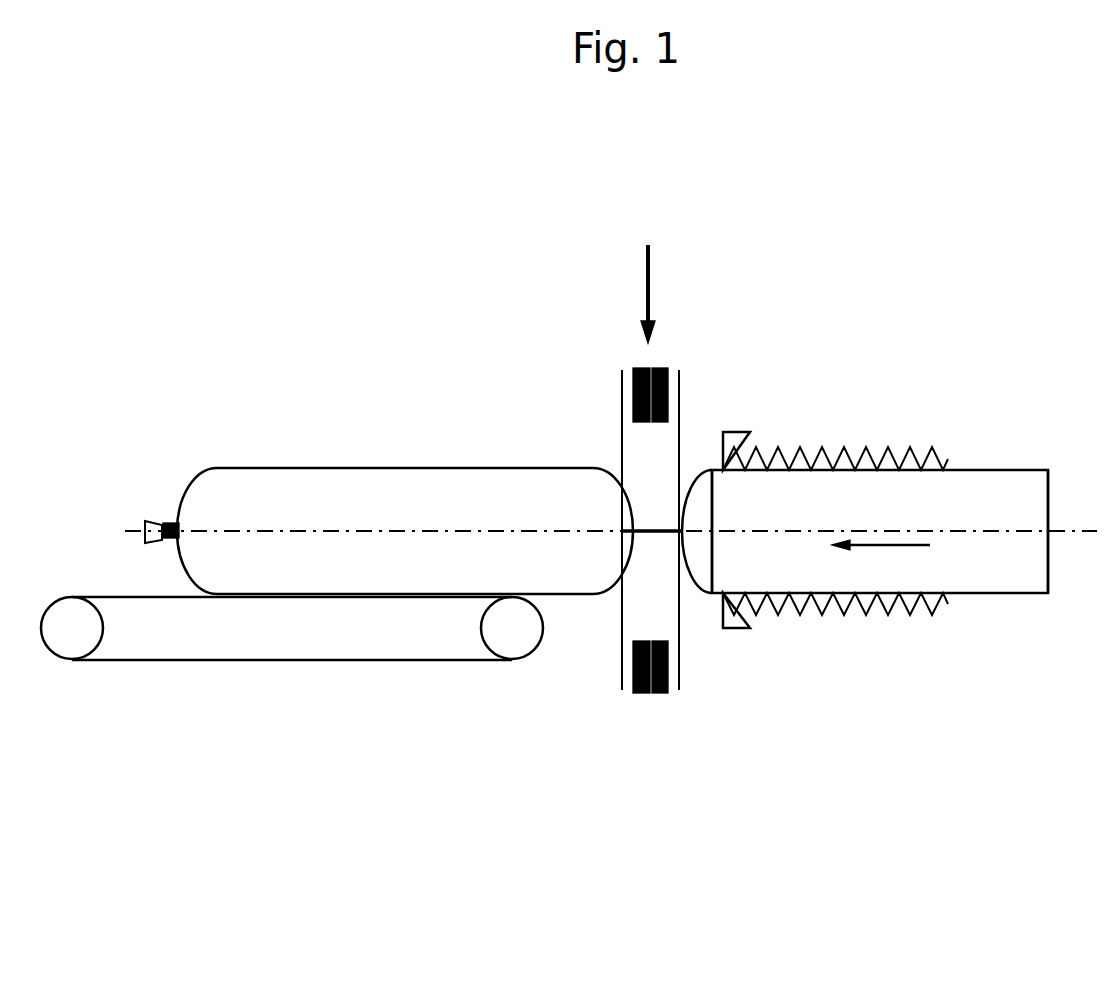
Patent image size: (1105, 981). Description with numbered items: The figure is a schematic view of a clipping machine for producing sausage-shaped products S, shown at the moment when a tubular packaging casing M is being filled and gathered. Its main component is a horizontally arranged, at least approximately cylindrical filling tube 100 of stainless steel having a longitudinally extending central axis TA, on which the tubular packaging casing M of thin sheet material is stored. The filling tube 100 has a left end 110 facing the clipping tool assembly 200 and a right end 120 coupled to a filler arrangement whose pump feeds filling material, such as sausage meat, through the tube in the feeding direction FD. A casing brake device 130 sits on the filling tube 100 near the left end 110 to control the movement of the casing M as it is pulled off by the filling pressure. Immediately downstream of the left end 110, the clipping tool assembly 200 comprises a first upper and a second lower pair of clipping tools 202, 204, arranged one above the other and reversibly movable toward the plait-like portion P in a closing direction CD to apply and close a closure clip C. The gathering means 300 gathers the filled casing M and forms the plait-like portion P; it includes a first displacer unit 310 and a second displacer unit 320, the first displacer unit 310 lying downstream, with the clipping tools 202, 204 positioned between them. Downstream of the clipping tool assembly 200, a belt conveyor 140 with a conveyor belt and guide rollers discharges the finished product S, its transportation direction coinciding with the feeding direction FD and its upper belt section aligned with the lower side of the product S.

The filling tube 100 is at (865, 519).
The left end 110 is at (713, 498).
The right end 120 is at (1048, 507).
The casing brake device 130 is at (740, 623).
The belt conveyor 140 is at (391, 706).
The clipping tool assembly 200 is at (633, 516).
The first upper pair of clipping tools 202 is at (667, 387).
The second lower pair of clipping tools 204 is at (633, 682).
The gathering means 300 is at (711, 596).
The first displacer unit 310 is at (622, 567).
The second displacer unit 320 is at (679, 645).
The sausage-shaped product S is at (432, 467).
The closure clip C is at (163, 525).
The plait-like portion P is at (652, 530).
The tubular packaging casing M is at (908, 613).
The closing direction CD is at (669, 294).
The feeding direction FD is at (881, 562).
The central axis TA is at (1087, 532).